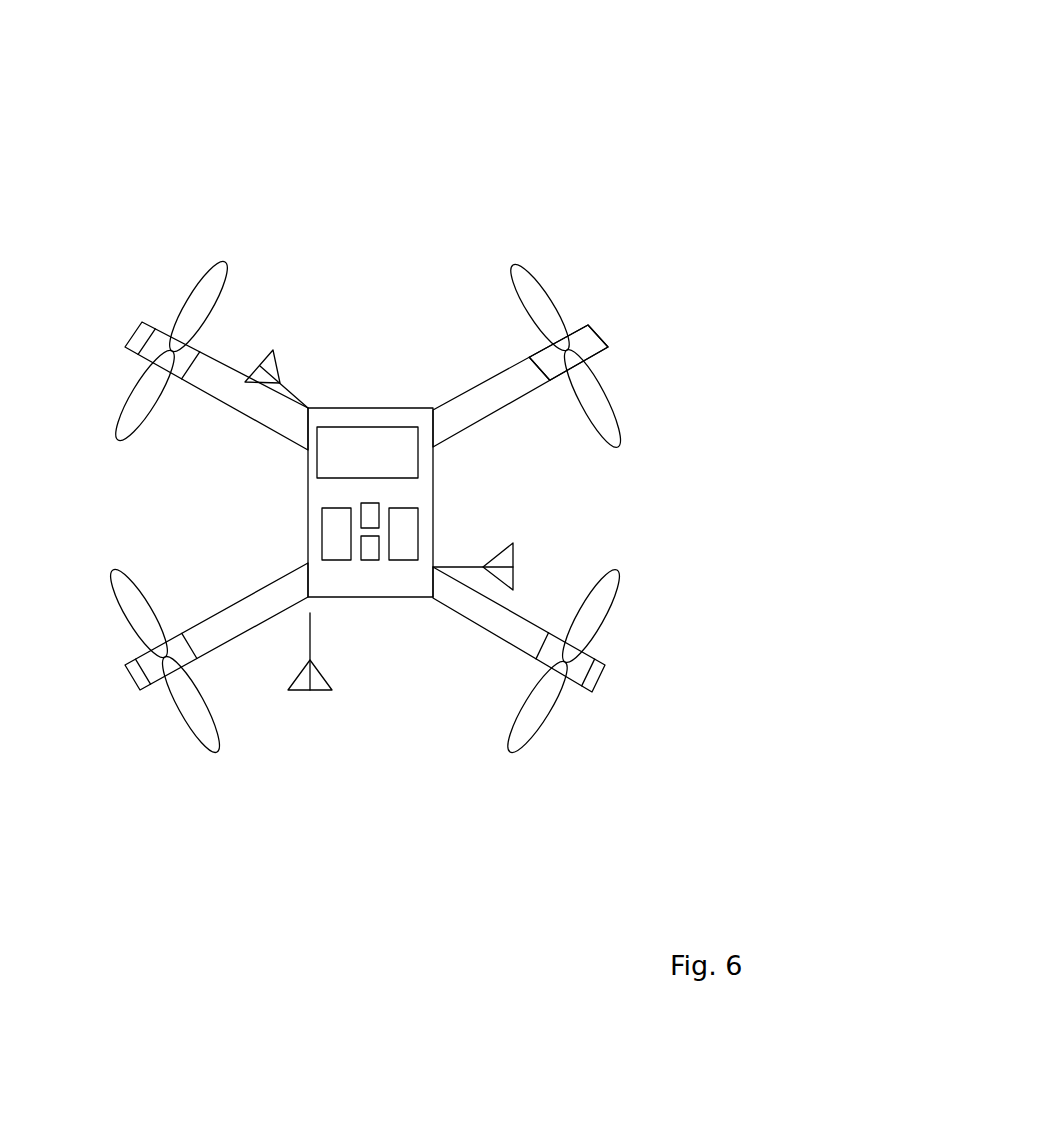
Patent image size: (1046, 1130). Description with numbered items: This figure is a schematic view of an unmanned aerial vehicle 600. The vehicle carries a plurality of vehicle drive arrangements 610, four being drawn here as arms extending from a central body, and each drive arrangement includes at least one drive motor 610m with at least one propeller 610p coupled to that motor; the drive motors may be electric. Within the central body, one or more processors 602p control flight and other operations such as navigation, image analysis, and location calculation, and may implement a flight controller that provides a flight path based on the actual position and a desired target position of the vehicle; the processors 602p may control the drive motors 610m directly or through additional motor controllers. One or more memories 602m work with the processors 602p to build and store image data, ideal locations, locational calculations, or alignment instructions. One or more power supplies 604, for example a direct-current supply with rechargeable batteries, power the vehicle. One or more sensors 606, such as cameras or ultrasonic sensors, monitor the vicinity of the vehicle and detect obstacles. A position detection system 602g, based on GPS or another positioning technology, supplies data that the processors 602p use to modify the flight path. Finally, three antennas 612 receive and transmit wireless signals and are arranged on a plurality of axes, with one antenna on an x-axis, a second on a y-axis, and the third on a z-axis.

The unmanned aerial vehicle 600 is at (534, 138).
The processor 602p is at (335, 533).
The position detection system 602g is at (369, 513).
The memory 602m is at (370, 548).
The power supply 604 is at (404, 534).
The sensor 606 is at (368, 453).
The vehicle drive arrangement 610 is at (225, 352).
The drive motor 610m is at (583, 345).
The propeller 610p is at (610, 423).
The antenna 612 is at (279, 323).